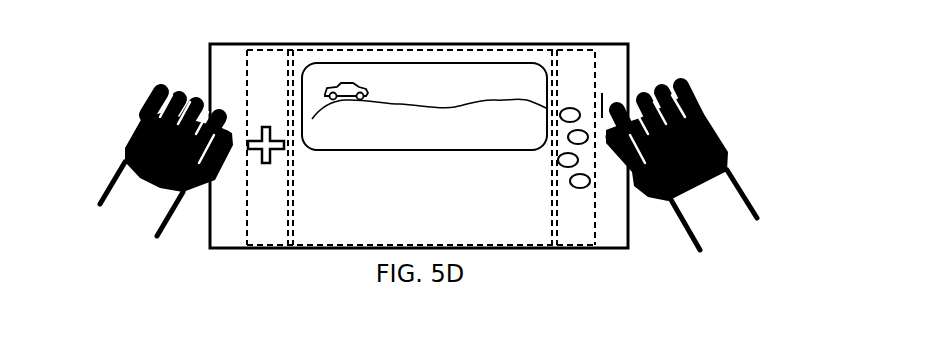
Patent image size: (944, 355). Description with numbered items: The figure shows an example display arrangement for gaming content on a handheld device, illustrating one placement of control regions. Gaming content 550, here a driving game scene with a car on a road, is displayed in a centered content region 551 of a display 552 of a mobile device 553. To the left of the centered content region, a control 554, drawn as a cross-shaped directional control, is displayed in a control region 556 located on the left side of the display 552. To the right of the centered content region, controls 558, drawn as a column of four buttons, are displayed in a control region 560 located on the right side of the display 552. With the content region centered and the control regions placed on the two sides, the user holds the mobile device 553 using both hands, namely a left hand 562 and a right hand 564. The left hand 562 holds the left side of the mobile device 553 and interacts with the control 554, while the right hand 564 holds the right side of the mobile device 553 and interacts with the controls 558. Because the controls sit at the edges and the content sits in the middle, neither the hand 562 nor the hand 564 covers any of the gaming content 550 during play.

The gaming content 550 is at (369, 130).
The centered content region 551 is at (355, 228).
The display 552 is at (464, 44).
The mobile device 553 is at (600, 52).
The control 554 is at (283, 147).
The control region 556 is at (271, 228).
The controls 558 is at (575, 193).
The control region 560 is at (571, 232).
The hand 562 is at (130, 125).
The hand 564 is at (710, 126).